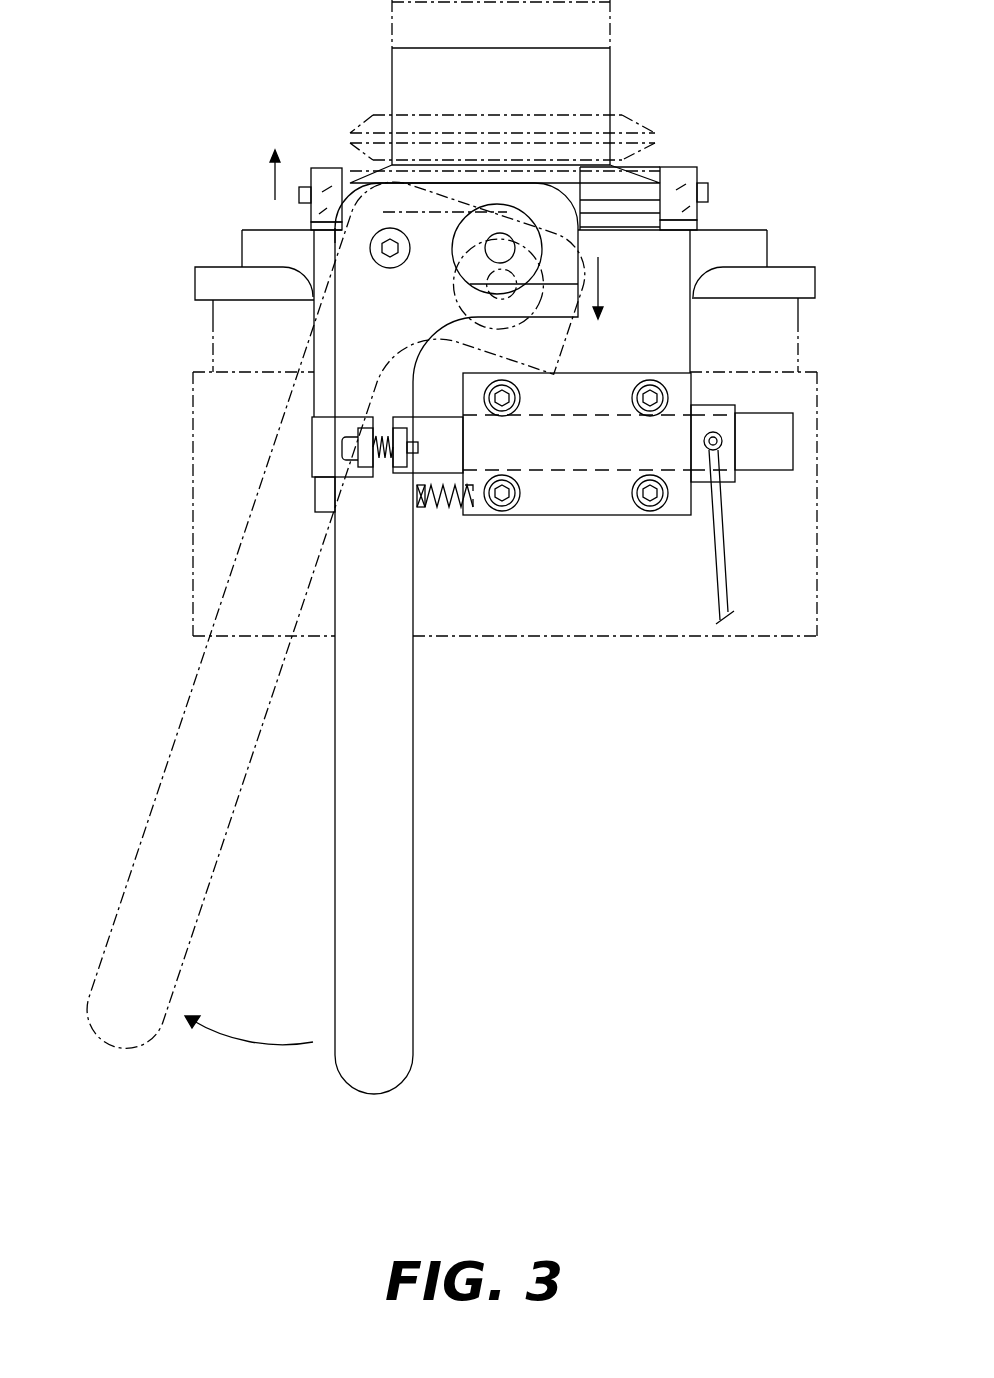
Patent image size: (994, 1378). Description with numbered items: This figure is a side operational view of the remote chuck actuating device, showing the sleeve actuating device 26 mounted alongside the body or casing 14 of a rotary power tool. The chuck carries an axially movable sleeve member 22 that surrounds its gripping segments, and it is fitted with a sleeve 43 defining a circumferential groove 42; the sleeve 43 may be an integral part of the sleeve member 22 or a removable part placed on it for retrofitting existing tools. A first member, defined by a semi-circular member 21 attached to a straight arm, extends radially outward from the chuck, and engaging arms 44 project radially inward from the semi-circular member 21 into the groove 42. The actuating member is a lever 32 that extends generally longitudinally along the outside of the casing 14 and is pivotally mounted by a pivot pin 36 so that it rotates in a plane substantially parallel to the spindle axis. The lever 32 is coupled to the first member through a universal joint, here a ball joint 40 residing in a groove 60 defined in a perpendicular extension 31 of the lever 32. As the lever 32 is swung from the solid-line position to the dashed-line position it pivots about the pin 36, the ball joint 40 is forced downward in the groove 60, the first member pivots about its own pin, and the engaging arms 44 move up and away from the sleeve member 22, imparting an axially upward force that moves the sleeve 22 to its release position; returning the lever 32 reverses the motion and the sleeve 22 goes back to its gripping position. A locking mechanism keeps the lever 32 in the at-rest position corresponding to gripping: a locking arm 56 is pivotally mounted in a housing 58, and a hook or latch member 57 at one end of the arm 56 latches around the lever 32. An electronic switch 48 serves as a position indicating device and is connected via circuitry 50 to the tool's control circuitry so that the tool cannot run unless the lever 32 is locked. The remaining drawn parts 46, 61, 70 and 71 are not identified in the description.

The casing 14 is at (218, 437).
The semi-circular member 21 is at (318, 220).
The sleeve member 22 is at (600, 85).
The sleeve actuating device 26 is at (148, 110).
The perpendicular extension 31 is at (550, 300).
The lever arm 32 is at (179, 762).
The pivot pin 36 is at (393, 253).
The ball joint 40 is at (502, 232).
The circumferential groove 42 is at (637, 163).
The sleeve 43 is at (378, 122).
The engaging arms 44 is at (302, 185).
The mounting flange 46 is at (752, 252).
The electronic switch 48 is at (742, 408).
The circuitry 50 is at (723, 560).
The locking arm 56 is at (755, 455).
The latch member 57 is at (325, 443).
The housing 58 is at (552, 492).
The groove 60 is at (568, 230).
The latch pin 61 is at (380, 492).
The spring 70 is at (457, 510).
The spring seat 71 is at (425, 512).